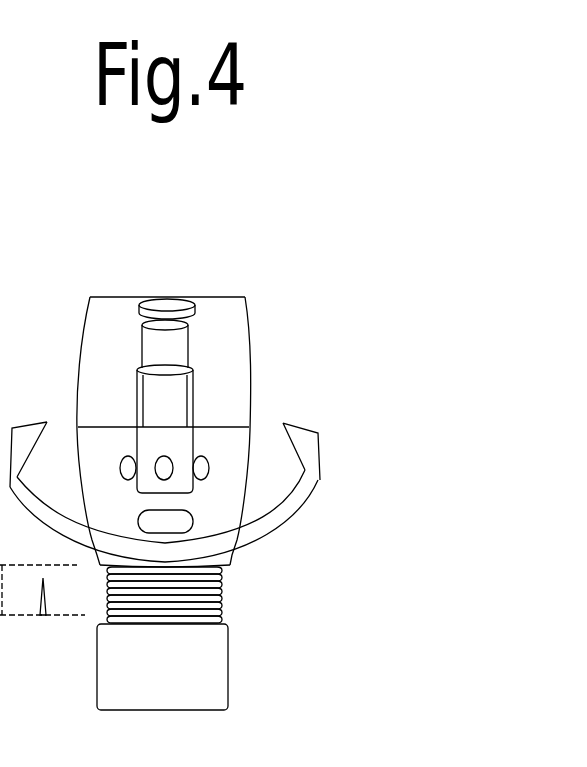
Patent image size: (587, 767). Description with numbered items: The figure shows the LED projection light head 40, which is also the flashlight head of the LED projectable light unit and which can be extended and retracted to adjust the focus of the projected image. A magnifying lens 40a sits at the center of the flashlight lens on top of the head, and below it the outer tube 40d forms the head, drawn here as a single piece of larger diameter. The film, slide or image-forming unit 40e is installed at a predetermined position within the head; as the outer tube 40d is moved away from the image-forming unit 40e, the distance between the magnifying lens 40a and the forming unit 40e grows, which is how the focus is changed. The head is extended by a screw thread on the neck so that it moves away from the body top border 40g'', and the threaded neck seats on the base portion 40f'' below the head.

The zoom handle body 40 is at (257, 387).
The cap 40a is at (170, 303).
The inner cylinder / stem 40d is at (166, 362).
The oval button/indicator 40e is at (193, 508).
The threaded portion 40g'' is at (277, 562).
The base block 40f'' is at (265, 667).